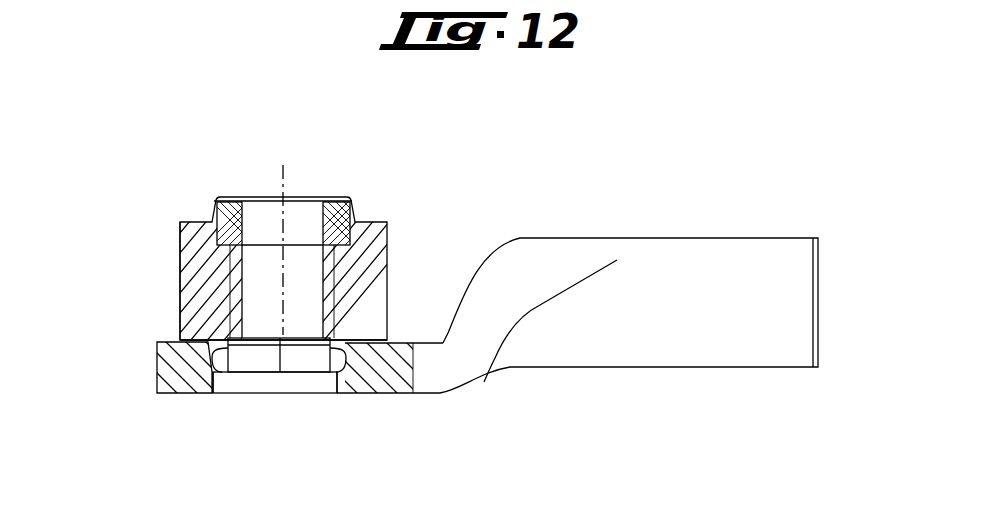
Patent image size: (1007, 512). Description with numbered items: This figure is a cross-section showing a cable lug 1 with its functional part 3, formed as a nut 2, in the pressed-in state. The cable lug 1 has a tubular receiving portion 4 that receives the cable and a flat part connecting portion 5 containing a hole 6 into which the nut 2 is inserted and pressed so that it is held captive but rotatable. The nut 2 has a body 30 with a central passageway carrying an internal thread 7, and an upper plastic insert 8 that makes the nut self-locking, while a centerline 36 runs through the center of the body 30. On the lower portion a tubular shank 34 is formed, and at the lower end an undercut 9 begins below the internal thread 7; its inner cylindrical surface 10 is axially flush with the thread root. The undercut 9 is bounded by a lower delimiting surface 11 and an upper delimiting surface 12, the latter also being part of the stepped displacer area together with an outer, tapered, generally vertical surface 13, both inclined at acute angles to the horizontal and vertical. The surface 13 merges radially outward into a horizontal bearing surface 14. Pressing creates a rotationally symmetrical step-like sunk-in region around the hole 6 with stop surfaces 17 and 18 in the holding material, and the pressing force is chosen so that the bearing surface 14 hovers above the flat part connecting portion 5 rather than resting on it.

The cable lug 1 is at (598, 190).
The nut 2 is at (358, 295).
The functional part 3 is at (183, 213).
The tubular receiving portion 4 is at (705, 323).
The flat part connecting portion 5 is at (167, 372).
The hole 6 is at (290, 387).
The internal thread 7 is at (327, 303).
The upper plastic insert 8 is at (230, 205).
The undercut 9 is at (352, 357).
The cylindrical surface 10 is at (307, 355).
The lower delimiting surface 11 is at (350, 362).
The upper delimiting surface 12 is at (353, 347).
The outer generally vertical surface 13 is at (352, 352).
The bearing surface 14 is at (188, 340).
The stop surface 17 is at (218, 345).
The stop surface 18 is at (205, 342).
The body 30 is at (385, 222).
The tubular shank 34 is at (225, 366).
The centerline 36 is at (287, 180).